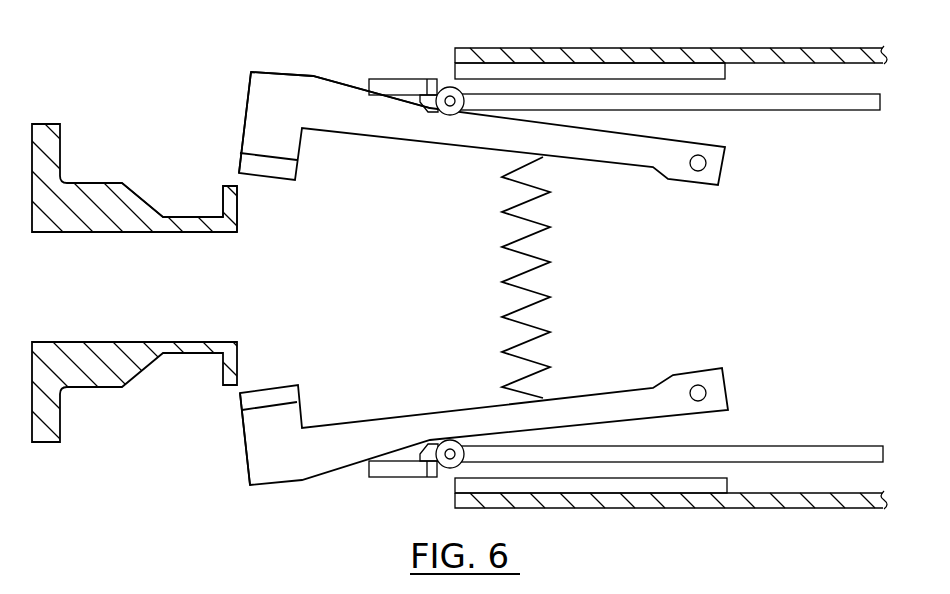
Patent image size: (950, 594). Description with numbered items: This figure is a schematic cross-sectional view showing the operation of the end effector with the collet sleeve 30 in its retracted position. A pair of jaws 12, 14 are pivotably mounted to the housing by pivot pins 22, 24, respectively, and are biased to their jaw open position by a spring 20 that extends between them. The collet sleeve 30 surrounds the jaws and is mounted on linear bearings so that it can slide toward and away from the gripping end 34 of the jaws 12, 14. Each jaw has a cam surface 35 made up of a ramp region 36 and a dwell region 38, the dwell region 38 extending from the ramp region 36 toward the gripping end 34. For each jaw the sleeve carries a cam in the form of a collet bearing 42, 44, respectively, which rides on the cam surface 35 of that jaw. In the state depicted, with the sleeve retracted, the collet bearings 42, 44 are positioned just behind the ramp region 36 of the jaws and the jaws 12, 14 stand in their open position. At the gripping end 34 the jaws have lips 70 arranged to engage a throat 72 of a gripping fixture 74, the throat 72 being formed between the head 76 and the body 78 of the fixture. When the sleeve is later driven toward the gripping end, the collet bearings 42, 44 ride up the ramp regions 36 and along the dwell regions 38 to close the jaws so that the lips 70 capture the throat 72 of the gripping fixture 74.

The jaw 12 is at (419, 417).
The jaw 14 is at (420, 137).
The spring 20 is at (553, 257).
The pivot pin 22 is at (698, 385).
The pivot pin 24 is at (697, 172).
The collet sleeve 30 is at (798, 110).
The gripping end 34 is at (443, 273).
The cam surface 35 is at (328, 70).
The ramp region 36 is at (356, 86).
The dwell region 38 is at (284, 72).
The collet bearing 42 is at (451, 440).
The collet bearing 44 is at (442, 90).
The lip 70 is at (279, 181).
The throat 72 is at (183, 217).
The gripping fixture 74 is at (137, 120).
The head 76 is at (232, 186).
The body 78 is at (113, 183).